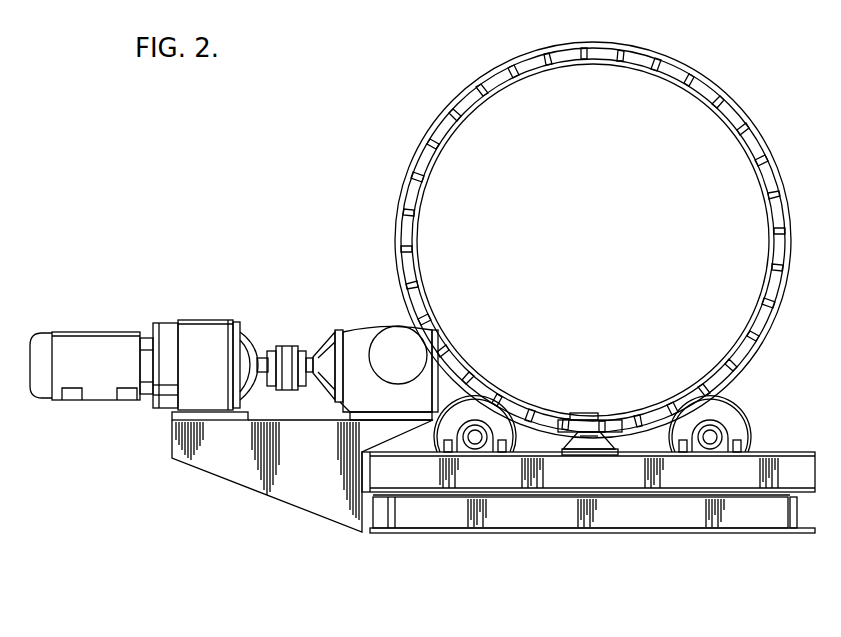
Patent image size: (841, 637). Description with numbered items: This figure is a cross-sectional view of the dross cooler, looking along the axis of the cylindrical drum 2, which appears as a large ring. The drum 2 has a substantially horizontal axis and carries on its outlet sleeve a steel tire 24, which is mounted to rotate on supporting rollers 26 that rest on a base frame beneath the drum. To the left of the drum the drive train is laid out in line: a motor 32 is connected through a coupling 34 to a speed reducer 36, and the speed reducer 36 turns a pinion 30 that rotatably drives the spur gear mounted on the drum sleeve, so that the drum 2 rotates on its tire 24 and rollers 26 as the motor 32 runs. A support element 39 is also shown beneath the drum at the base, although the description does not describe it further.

The cylindrical drum 2 is at (505, 62).
The steel tire 24 is at (614, 58).
The supporting rollers 26 is at (746, 423).
The pinion 30 is at (397, 330).
The motor 32 is at (86, 330).
The coupling 34 is at (283, 348).
The speed reducer 36 is at (352, 330).
The support 39 is at (602, 425).